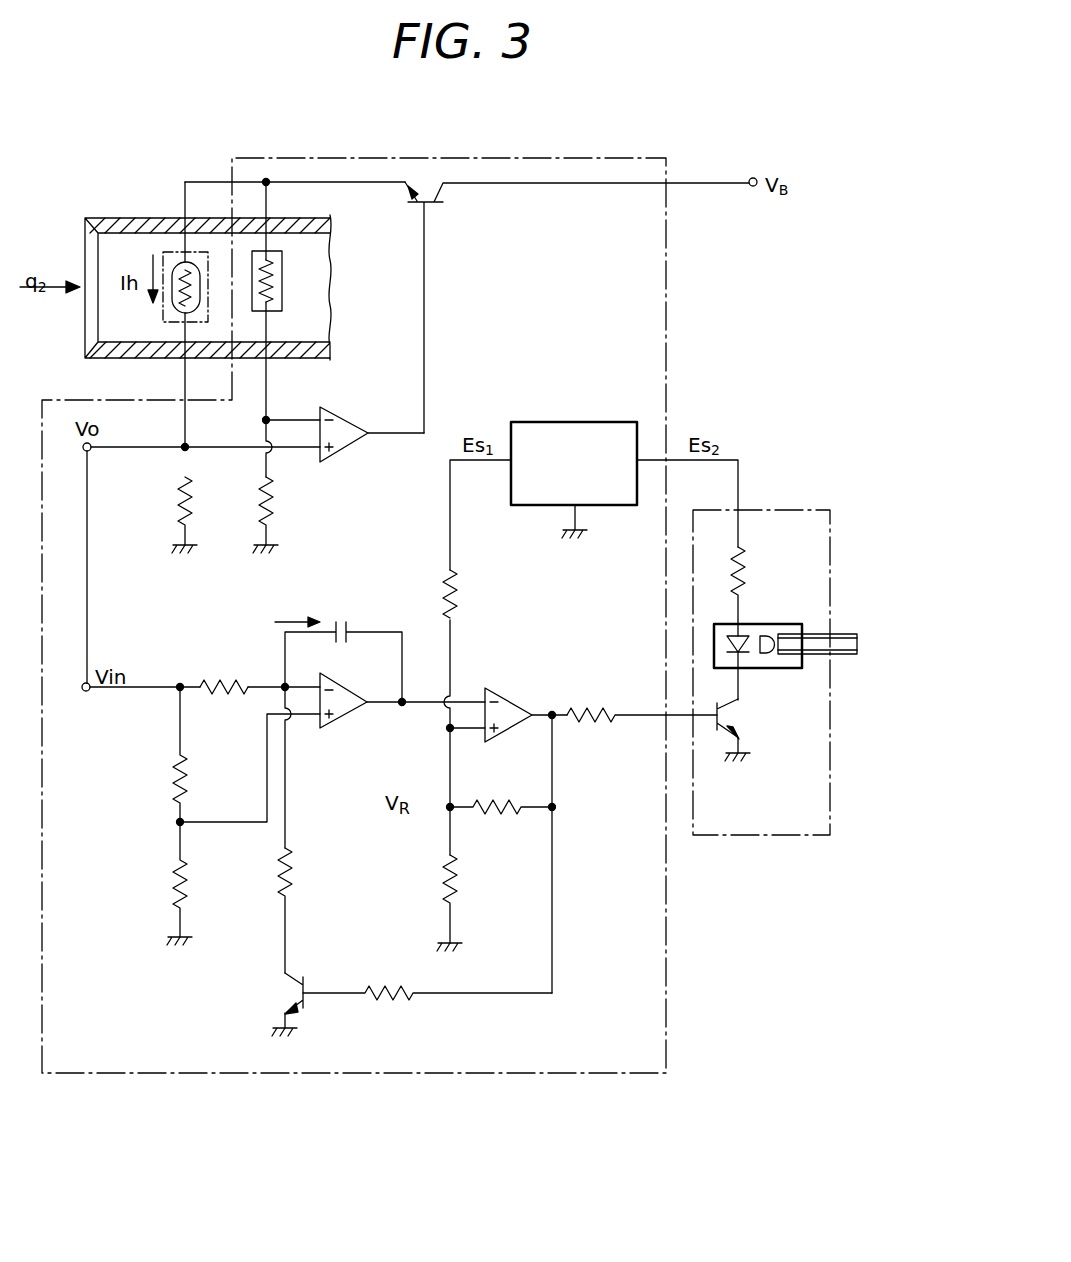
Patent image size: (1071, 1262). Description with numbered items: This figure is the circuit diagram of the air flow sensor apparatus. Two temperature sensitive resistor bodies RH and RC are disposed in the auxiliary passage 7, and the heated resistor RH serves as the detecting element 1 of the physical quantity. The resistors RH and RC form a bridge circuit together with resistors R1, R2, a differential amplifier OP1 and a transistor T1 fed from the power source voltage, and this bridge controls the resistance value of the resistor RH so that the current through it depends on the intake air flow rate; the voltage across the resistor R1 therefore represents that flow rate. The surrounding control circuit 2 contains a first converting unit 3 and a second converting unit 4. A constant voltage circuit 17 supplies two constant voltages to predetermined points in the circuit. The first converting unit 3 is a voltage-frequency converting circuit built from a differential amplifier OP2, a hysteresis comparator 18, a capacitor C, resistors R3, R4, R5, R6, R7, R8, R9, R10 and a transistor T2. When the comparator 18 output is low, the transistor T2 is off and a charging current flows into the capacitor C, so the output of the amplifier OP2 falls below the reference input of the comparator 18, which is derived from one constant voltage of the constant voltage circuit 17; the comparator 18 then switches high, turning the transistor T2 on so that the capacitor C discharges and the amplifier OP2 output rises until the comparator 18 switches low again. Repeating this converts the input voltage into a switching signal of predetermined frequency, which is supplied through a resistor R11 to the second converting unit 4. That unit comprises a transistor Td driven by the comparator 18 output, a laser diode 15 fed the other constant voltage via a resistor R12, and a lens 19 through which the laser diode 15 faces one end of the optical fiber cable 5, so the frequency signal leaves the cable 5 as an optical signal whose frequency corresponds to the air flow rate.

The detecting element 1 is at (170, 305).
The control circuit 2 is at (100, 1075).
The first converting unit 3 is at (380, 668).
The second converting unit 4 is at (804, 837).
The optical fiber cable 5 is at (838, 634).
The auxiliary passage 7 is at (107, 255).
The laser diode 15 is at (742, 636).
The constant voltage circuit 17 is at (612, 422).
The hysteresis comparator 18 is at (504, 694).
The lens 19 is at (768, 654).
The temperature sensitive resistor body RH is at (177, 265).
The temperature sensitive resistor body RC is at (283, 285).
The transistor T1 is at (440, 204).
The transistor T2 is at (298, 993).
The transistor Td is at (742, 730).
The differential amplifier OP1 is at (357, 421).
The differential amplifier OP2 is at (350, 712).
The capacitor C is at (343, 648).
The resistor R1 is at (198, 515).
The resistor R2 is at (279, 515).
The resistor R3 is at (163, 754).
The resistor R4 is at (166, 883).
The resistor R5 is at (224, 673).
The resistor R6 is at (468, 594).
The resistor R7 is at (465, 903).
The resistor R8 is at (501, 824).
The resistor R9 is at (427, 979).
The resistor R10 is at (310, 910).
The resistor R11 is at (642, 703).
The resistor R12 is at (761, 591).